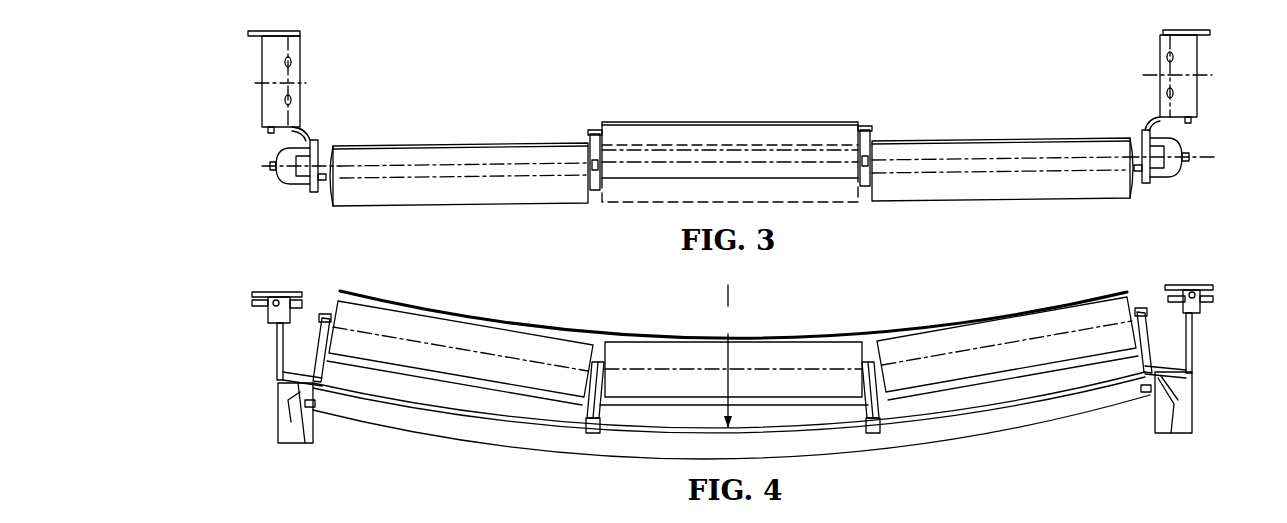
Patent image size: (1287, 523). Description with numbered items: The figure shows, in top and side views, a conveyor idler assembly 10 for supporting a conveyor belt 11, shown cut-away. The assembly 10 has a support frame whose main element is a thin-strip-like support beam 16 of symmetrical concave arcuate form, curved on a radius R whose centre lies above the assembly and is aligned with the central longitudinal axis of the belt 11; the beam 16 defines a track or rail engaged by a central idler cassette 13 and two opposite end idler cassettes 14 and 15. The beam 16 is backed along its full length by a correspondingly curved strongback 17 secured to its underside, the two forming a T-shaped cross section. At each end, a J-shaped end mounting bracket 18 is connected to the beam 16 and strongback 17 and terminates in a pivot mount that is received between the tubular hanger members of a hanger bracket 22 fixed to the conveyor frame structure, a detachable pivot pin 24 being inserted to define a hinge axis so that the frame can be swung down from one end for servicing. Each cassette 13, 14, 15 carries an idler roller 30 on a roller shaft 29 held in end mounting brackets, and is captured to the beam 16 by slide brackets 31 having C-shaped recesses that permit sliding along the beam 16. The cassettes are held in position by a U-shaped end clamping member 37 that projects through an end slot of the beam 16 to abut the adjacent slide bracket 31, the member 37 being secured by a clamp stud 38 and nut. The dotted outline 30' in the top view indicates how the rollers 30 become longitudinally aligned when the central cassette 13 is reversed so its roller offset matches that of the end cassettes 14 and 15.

In FIG. 4, the conveyor idler assembly 10 is at (483, 448).
In FIG. 4, the conveyor belt 11 is at (668, 333).
In FIG. 3, the central idler cassette 13 is at (713, 118).
In FIG. 4, the central idler cassette 13 is at (778, 333).
In FIG. 3, the end idler cassette 14 is at (418, 130).
In FIG. 4, the end idler cassette 14 is at (466, 304).
In FIG. 3, the end idler cassette 15 is at (962, 132).
In FIG. 4, the end idler cassette 15 is at (983, 311).
In FIG. 3, the support beam 16 is at (1175, 172).
In FIG. 4, the support beam 16 is at (826, 432).
In FIG. 4, the strongback 17 is at (985, 432).
In FIG. 3, the end mounting bracket 18 is at (302, 55).
In FIG. 4, the end mounting bracket 18 is at (268, 373).
In FIG. 4, the hanger bracket 22 is at (258, 312).
In FIG. 4, the pivot pin 24 is at (1193, 294).
In FIG. 3, the roller shaft 29 is at (318, 196).
In FIG. 3, the idler roller 30 is at (731, 117).
In FIG. 3, the enlarged roller shell 30' is at (732, 210).
In FIG. 4, the slide bracket 31 is at (868, 436).
In FIG. 4, the end clamping member 37 is at (1177, 437).
In FIG. 4, the clamp stud 38 is at (1192, 396).
In FIG. 4, the radius R is at (727, 356).